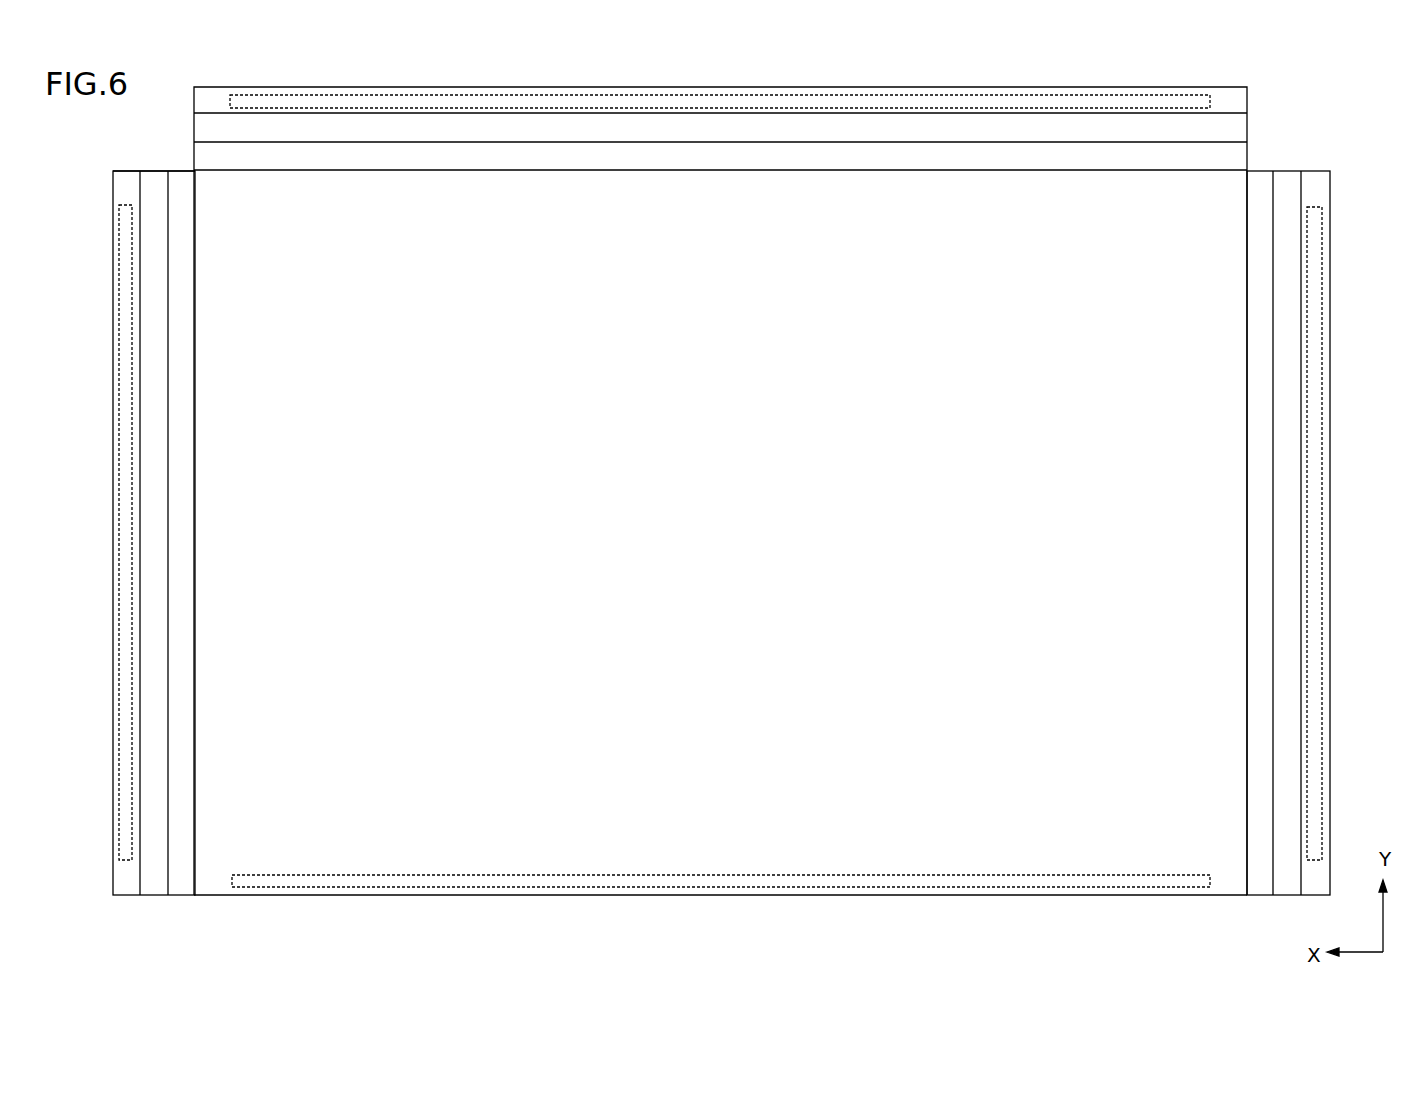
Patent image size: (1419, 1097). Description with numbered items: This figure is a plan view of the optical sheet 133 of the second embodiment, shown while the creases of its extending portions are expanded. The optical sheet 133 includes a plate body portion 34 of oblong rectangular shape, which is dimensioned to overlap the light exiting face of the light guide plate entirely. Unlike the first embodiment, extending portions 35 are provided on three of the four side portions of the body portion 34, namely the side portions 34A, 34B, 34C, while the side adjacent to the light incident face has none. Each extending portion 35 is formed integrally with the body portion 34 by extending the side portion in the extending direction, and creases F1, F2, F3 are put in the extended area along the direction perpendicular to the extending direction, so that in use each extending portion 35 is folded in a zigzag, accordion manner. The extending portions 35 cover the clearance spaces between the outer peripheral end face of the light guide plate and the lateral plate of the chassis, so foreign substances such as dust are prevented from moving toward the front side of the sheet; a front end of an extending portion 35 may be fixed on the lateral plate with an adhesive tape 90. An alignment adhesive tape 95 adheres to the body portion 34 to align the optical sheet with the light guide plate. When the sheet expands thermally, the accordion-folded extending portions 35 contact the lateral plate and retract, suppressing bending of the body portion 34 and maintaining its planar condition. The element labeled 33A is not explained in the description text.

The optical sheet 133 is at (1198, 77).
The plate body portion 34 is at (1243, 913).
The side portion 34A is at (195, 882).
The side portion 34B is at (218, 168).
The side portion 34C is at (1247, 185).
The lower edge region of panel 33A is at (1170, 895).
The extending portion 35 is at (113, 913).
The adhesive tape 90 is at (130, 708).
The alignment adhesive tape 95 is at (262, 870).
The crease F1 is at (194, 190).
The crease F2 is at (167, 225).
The crease F3 is at (140, 258).